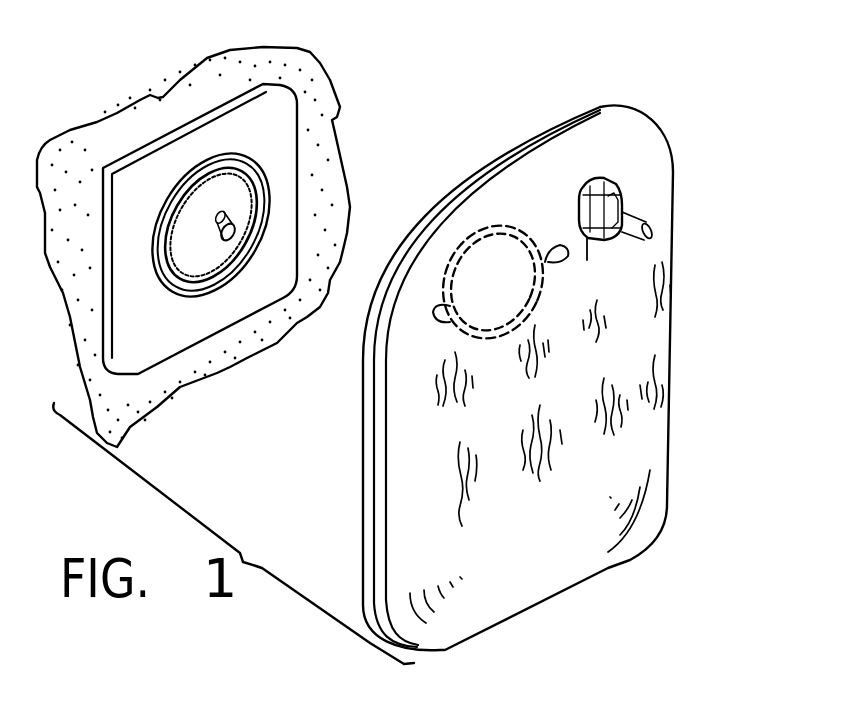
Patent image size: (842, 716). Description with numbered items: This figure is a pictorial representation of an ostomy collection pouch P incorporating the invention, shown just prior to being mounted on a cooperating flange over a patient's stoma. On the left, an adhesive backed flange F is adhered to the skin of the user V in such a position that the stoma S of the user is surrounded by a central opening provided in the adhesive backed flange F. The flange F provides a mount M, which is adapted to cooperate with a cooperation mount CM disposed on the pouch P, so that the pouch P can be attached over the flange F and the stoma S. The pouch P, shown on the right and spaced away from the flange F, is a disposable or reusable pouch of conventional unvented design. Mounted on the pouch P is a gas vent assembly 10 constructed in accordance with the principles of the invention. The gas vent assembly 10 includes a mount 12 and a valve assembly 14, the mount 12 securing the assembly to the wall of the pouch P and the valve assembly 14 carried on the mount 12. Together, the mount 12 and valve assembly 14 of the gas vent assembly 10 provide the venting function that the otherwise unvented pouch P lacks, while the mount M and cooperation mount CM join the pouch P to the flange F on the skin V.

The skin of the user V is at (182, 110).
The adhesive backed flange F is at (263, 117).
The stoma S is at (238, 222).
The mount M is at (190, 268).
The cooperation mount CM is at (517, 237).
The ostomy collection pouch P is at (623, 123).
The gas vent assembly 10 is at (683, 223).
The mount 12 is at (587, 240).
The valve assembly 14 is at (648, 222).